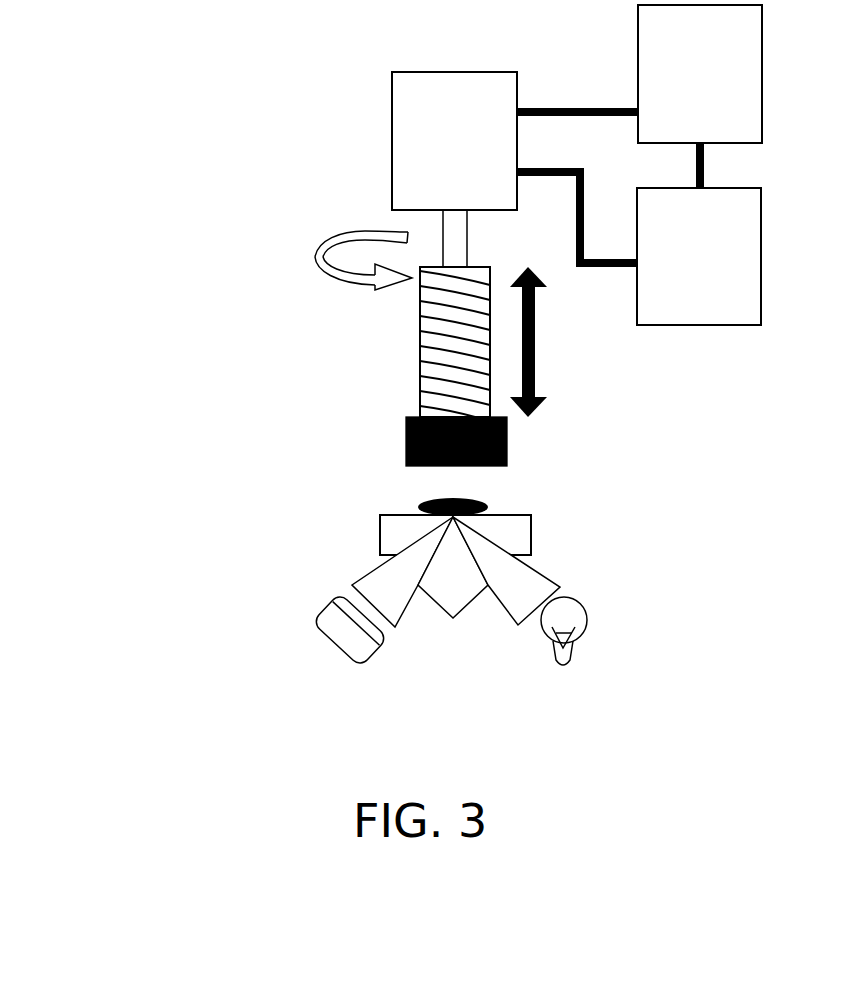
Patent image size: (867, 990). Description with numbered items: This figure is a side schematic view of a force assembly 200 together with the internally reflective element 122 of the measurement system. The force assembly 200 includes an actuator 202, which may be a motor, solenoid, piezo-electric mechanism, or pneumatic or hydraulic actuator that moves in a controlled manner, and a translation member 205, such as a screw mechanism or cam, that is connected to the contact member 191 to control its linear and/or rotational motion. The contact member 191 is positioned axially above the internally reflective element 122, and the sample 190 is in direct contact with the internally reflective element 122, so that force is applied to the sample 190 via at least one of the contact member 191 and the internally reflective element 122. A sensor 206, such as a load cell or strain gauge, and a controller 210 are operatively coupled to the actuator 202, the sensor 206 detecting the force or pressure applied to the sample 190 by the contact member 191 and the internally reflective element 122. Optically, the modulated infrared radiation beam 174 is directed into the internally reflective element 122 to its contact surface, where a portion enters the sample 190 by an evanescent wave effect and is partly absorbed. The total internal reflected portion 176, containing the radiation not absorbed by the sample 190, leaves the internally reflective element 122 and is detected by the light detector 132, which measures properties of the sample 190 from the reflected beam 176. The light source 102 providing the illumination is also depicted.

The force assembly 200 is at (252, 70).
The actuator 202 is at (480, 171).
The controller 210 is at (725, 104).
The sensor 206 is at (725, 287).
The translation member 205 is at (398, 326).
The contact member 191 is at (385, 434).
The internally reflective element 122 is at (395, 540).
The sample material 190 is at (467, 498).
The total internal reflected portion 176 is at (369, 585).
The modulated infrared radiation beam 174 is at (527, 577).
The light detector 132 is at (352, 630).
The light source 102 is at (587, 623).